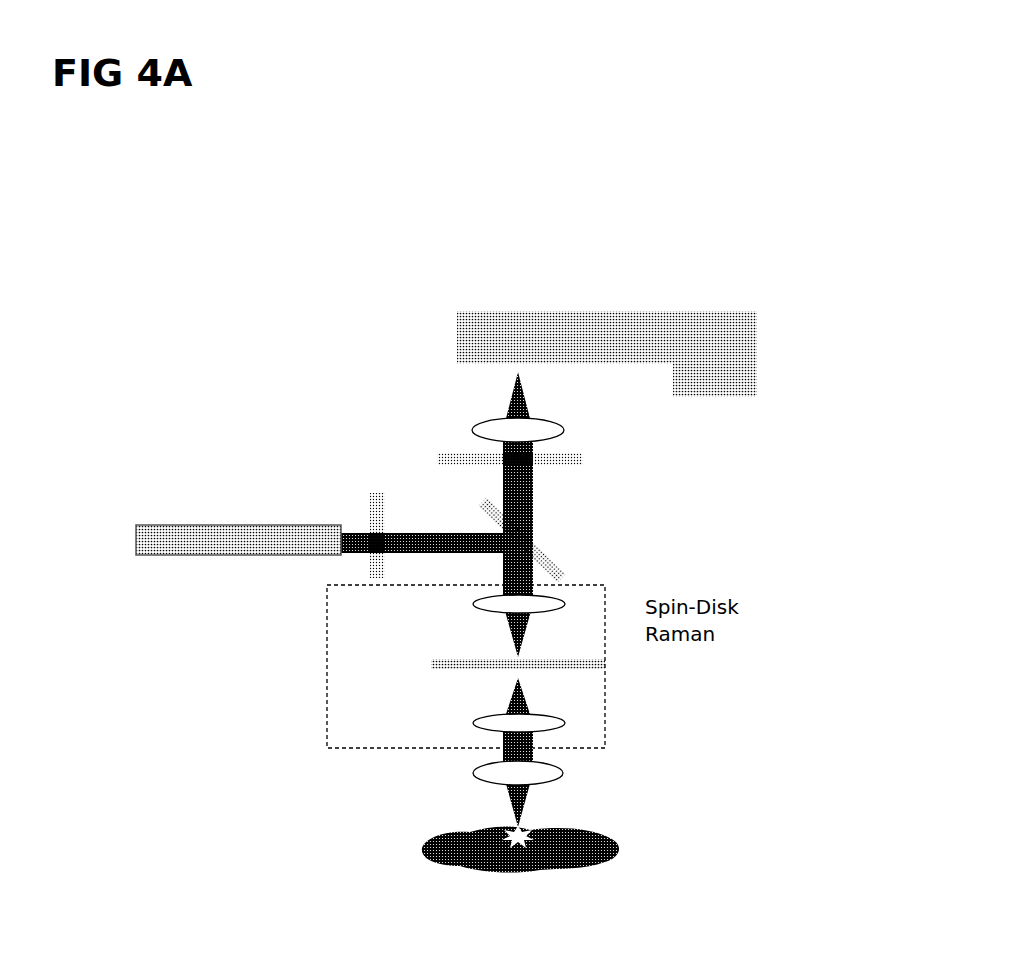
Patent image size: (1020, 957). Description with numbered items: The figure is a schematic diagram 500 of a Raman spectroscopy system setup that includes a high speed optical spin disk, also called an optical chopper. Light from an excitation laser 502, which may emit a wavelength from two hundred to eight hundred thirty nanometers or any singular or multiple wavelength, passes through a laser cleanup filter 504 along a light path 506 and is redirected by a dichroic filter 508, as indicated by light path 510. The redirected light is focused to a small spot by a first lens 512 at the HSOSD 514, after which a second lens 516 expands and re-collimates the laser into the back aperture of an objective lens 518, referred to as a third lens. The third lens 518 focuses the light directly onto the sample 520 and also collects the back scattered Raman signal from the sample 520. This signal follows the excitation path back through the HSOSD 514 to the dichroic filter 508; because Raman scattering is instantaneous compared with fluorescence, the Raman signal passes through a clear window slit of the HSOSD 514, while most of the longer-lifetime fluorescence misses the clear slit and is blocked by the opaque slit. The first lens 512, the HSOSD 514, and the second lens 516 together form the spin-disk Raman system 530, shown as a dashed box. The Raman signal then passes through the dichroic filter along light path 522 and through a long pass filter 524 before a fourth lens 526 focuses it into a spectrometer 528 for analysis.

The schematic diagram 500 is at (810, 145).
The excitation laser 502 is at (150, 530).
The laser cleanup filter 504 is at (372, 506).
The light path 506 is at (470, 540).
The dichroic filter 508 is at (560, 570).
The light path 510 is at (505, 562).
The first lens 512 is at (548, 604).
The high speed optical spin disk (HSOSD) 514 is at (578, 668).
The second lens 516 is at (486, 725).
The objective lens (third lens) 518 is at (534, 773).
The sample 520 is at (470, 864).
The light path 522 is at (535, 488).
The long pass filter 524 is at (442, 460).
The fourth lens 526 is at (534, 440).
The spectrometer 528 is at (708, 336).
The spin-disk Raman system 530 is at (326, 678).